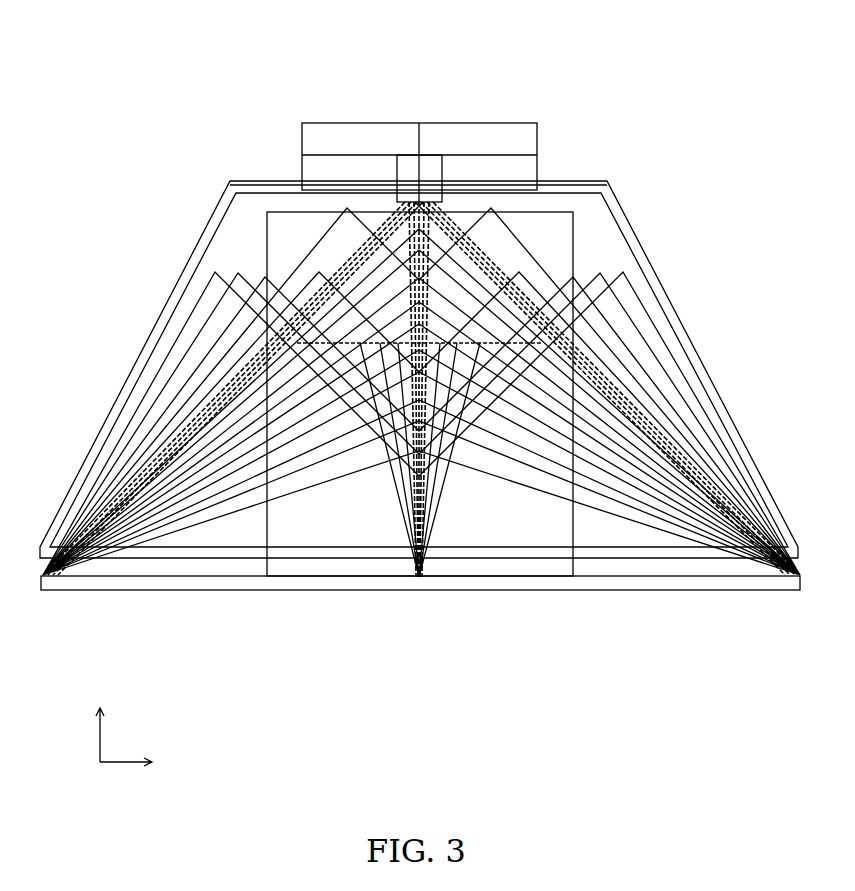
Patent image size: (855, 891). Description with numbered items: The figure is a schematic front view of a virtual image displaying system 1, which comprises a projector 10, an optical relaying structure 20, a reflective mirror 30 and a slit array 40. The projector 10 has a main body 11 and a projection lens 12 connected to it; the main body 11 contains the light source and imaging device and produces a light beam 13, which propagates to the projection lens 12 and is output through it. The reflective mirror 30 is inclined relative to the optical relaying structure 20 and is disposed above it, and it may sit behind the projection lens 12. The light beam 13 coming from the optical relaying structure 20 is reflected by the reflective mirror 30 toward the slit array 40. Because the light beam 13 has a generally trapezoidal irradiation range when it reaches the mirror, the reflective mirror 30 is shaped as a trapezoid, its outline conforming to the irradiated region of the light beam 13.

The virtual image displaying system 1 is at (211, 28).
The projector 10 is at (453, 53).
The main body 11 is at (343, 130).
The projection lens 12 is at (433, 162).
The light beam 13 is at (203, 325).
The optical relaying structure 20 is at (705, 582).
The reflective mirror 30 is at (610, 238).
The slit array 40 is at (320, 540).